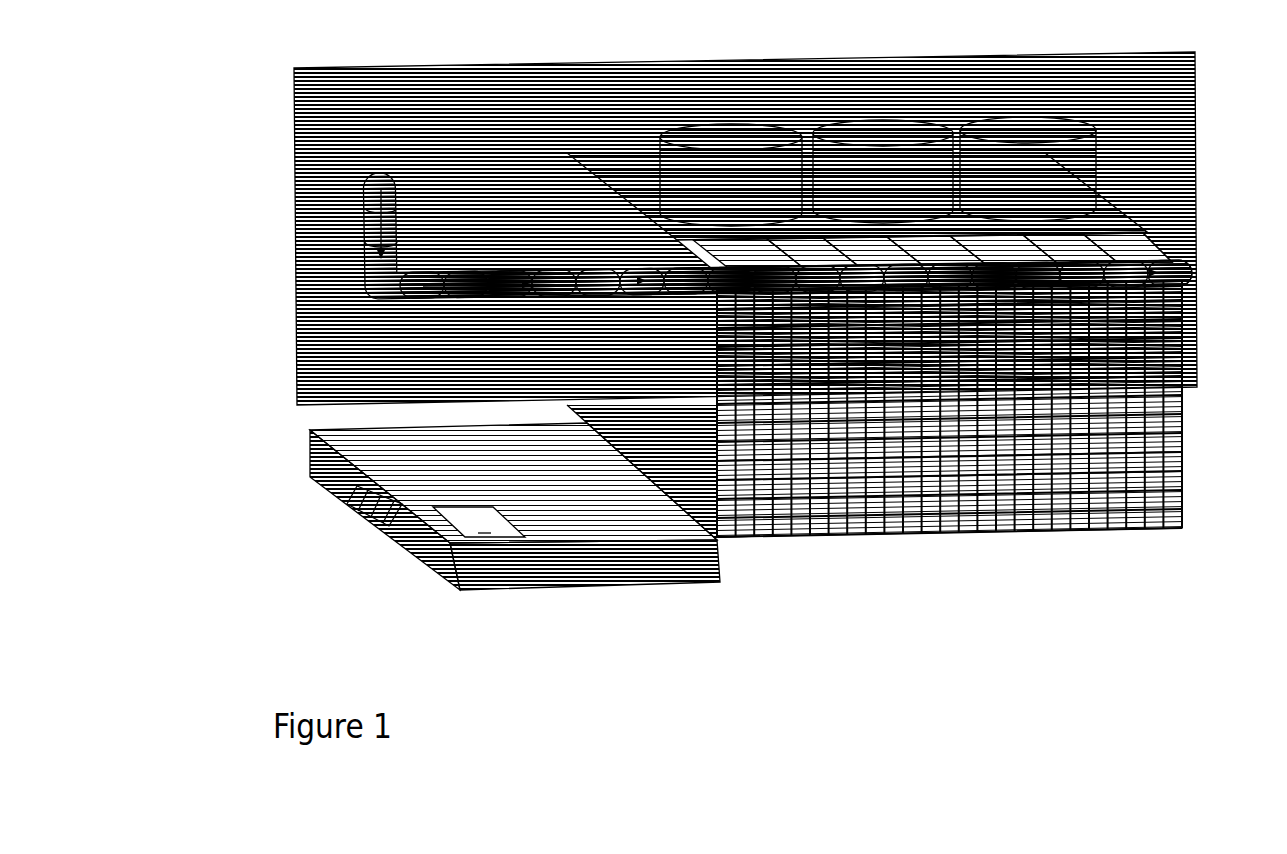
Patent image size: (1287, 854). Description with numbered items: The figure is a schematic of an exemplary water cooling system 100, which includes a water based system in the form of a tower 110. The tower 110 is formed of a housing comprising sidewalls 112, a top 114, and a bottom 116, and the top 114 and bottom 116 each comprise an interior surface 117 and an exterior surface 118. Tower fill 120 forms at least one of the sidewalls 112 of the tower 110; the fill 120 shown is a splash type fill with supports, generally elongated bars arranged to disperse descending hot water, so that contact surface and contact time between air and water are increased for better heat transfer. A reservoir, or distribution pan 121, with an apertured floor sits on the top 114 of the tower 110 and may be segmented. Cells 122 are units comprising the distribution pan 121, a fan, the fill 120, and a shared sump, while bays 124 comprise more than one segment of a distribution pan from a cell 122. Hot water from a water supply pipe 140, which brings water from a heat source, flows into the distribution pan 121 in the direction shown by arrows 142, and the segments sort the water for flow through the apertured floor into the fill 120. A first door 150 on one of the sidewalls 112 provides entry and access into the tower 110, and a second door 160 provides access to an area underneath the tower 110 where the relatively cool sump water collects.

The system 100 is at (776, 405).
The tower 110 is at (1205, 356).
The sidewalls 112 is at (785, 299).
The top 114 is at (610, 157).
The bottom 116 is at (805, 540).
The interior surface 117 is at (741, 552).
The exterior surface 118 is at (674, 495).
The tower fill 120 is at (748, 143).
The distribution pan 121 is at (888, 231).
The cells 122 is at (905, 250).
The bays 124 is at (969, 249).
The water supply pipe 140 is at (384, 158).
The arrows 142 is at (354, 222).
The first door 150 is at (601, 456).
The second door 160 is at (521, 524).